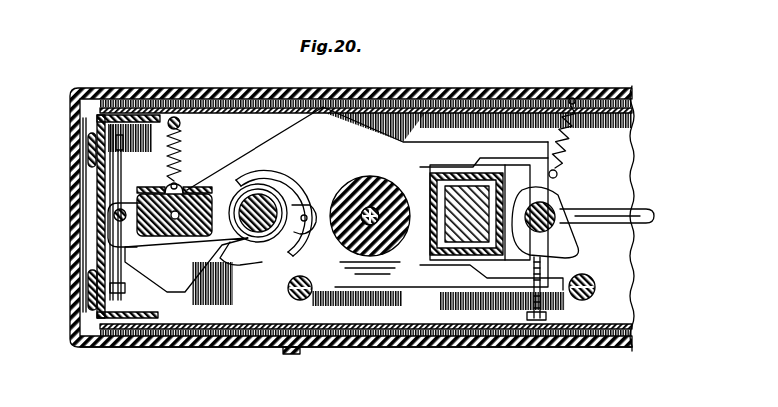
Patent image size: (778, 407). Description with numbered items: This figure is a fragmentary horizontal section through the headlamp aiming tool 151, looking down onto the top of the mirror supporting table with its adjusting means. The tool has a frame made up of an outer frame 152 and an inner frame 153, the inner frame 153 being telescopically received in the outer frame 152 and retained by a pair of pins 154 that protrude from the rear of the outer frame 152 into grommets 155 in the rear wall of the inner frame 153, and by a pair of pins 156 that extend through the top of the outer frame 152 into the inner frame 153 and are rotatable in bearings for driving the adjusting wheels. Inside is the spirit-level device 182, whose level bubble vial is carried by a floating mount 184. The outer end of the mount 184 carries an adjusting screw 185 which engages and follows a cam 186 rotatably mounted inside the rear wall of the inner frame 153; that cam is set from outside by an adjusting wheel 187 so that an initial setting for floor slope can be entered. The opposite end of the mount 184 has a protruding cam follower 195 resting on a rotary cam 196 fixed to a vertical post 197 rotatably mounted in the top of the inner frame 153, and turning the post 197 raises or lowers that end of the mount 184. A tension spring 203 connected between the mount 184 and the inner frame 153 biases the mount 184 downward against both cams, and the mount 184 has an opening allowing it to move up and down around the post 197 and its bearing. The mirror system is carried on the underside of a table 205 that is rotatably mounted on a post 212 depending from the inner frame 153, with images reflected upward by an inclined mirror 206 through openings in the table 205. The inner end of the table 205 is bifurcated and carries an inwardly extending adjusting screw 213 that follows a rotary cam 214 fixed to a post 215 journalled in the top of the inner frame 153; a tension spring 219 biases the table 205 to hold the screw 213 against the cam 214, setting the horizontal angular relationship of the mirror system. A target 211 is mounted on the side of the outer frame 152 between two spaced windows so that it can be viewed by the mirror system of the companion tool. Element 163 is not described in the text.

The headlamp aiming tool 151 is at (445, 352).
The outer frame 152 is at (492, 86).
The inner frame 153 is at (403, 108).
The pins 154 is at (80, 150).
The grommets 155 is at (78, 132).
The pins 156 is at (290, 292).
The actuating rod 163 is at (648, 210).
The spirit-level device 182 is at (157, 238).
The floating mount 184 is at (262, 184).
The adjusting screw 185 is at (114, 214).
The cam 186 is at (122, 276).
The adjusting wheel 187 is at (85, 238).
The cam follower 195 is at (312, 200).
The rotary cam 196 is at (288, 182).
The vertical post 197 is at (262, 264).
The tension spring 203 is at (181, 127).
The table 205 is at (396, 288).
The inclined mirror 206 is at (456, 185).
The target 211 is at (286, 356).
The post 212 is at (371, 190).
The adjusting screw 213 is at (545, 265).
The rotary cam 214 is at (578, 243).
The post 215 is at (552, 208).
The tension spring 219 is at (575, 135).